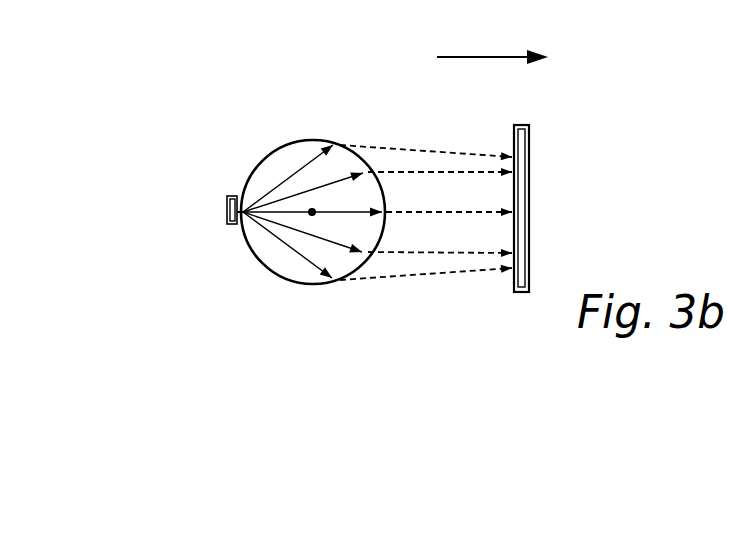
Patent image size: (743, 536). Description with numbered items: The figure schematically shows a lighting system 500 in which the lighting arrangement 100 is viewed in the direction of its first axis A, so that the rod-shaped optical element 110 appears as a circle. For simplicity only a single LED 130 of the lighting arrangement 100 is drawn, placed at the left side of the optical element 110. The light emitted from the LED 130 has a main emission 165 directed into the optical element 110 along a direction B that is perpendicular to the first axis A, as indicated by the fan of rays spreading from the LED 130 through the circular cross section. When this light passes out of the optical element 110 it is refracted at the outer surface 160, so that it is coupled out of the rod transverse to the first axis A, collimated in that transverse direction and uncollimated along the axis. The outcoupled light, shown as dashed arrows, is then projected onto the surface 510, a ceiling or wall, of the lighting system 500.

The lighting arrangement 100 is at (244, 147).
The optical element 110 is at (267, 268).
The LED 130 is at (227, 212).
The outer surface 160 is at (300, 140).
The main emission 165 is at (292, 214).
The lighting system 500 is at (368, 74).
The surface 510 is at (523, 205).